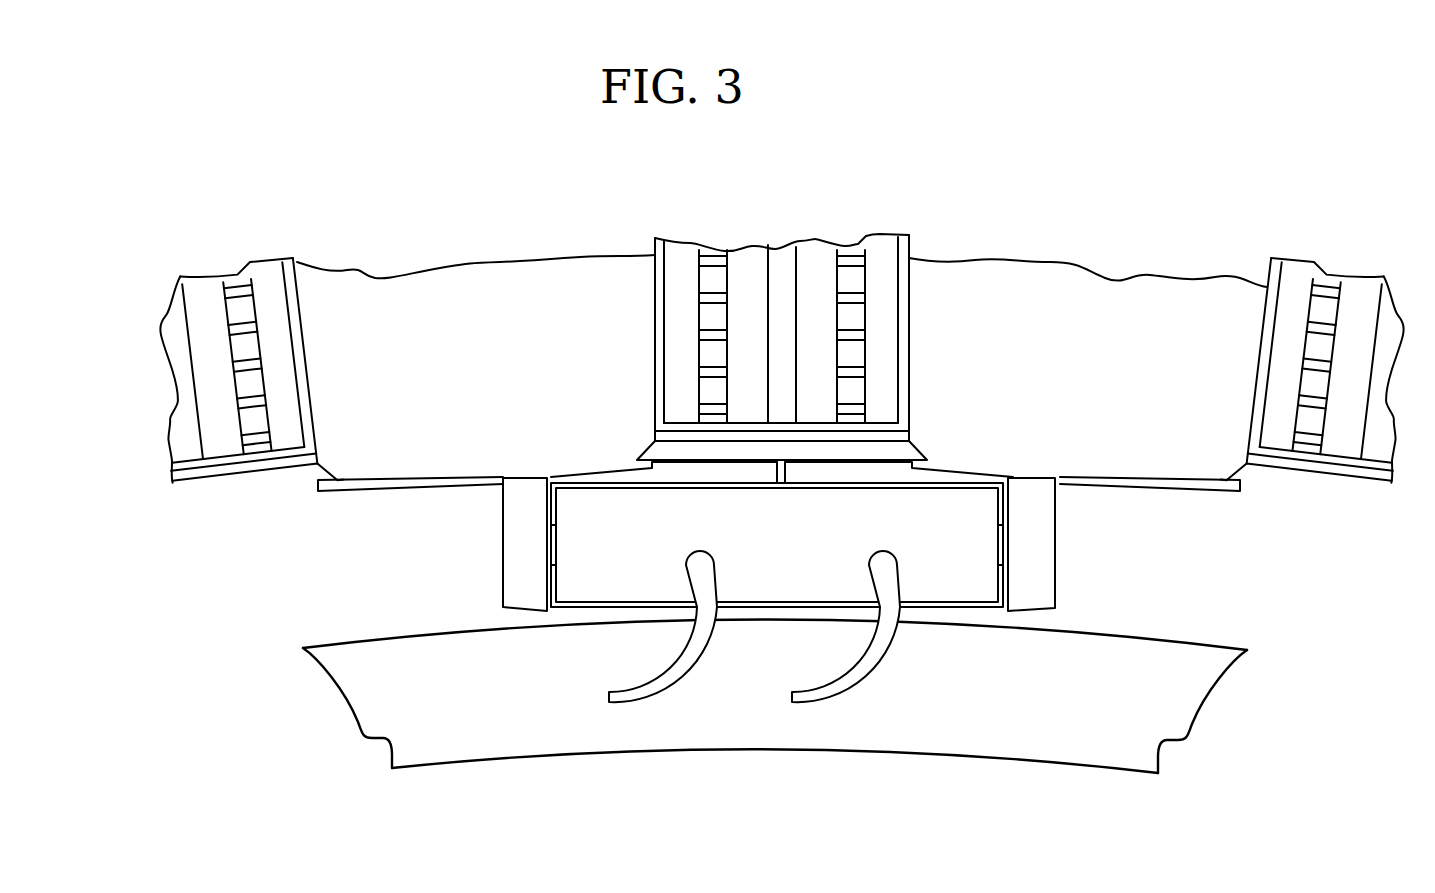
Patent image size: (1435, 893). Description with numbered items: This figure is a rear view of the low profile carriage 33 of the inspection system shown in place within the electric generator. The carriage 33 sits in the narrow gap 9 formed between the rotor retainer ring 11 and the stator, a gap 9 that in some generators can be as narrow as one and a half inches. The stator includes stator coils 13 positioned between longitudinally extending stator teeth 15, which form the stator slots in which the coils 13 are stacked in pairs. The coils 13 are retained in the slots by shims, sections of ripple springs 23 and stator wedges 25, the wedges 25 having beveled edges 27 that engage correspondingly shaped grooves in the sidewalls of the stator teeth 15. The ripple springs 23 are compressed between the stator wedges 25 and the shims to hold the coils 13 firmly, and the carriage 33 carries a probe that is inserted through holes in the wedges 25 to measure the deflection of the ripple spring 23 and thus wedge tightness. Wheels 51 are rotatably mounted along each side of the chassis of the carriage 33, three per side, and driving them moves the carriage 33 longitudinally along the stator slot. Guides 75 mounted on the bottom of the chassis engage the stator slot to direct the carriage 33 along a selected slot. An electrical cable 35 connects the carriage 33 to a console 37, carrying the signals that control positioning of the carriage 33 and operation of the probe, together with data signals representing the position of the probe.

The gap 9 is at (1198, 572).
The rotor retainer ring 11 is at (1184, 658).
The stator coils 13 is at (811, 252).
The stator teeth 15 is at (1137, 293).
The ripple springs 23 is at (723, 440).
The stator wedges 25 is at (870, 448).
The beveled edges 27 is at (905, 457).
The low profile carriage 33 is at (940, 608).
The electrical cable 35 is at (653, 696).
The console 37 is at (820, 698).
The wheels 51 is at (515, 560).
The guides 75 is at (799, 473).